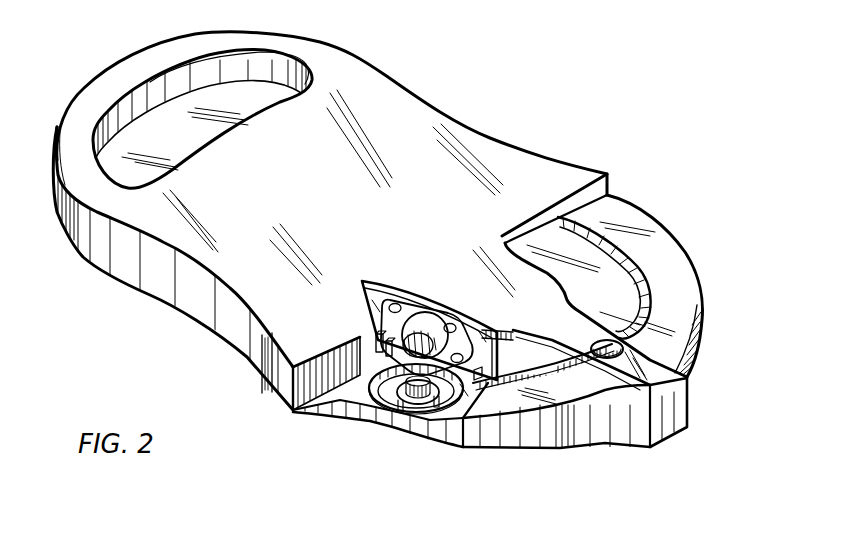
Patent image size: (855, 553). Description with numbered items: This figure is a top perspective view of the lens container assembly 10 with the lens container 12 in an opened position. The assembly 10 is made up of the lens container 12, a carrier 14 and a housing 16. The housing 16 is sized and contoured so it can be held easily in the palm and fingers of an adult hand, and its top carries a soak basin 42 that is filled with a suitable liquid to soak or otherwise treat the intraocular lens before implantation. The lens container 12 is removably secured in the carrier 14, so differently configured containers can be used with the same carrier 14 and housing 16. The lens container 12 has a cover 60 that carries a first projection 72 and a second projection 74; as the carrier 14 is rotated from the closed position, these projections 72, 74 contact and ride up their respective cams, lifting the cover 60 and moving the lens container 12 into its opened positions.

The lens container assembly 10 is at (183, 331).
The lens container 12 is at (451, 415).
The carrier 14 is at (500, 428).
The housing 16 is at (448, 130).
The soak basin 42 is at (130, 103).
The cover 60 is at (377, 290).
The first projection 72 is at (374, 338).
The second projection 74 is at (512, 330).